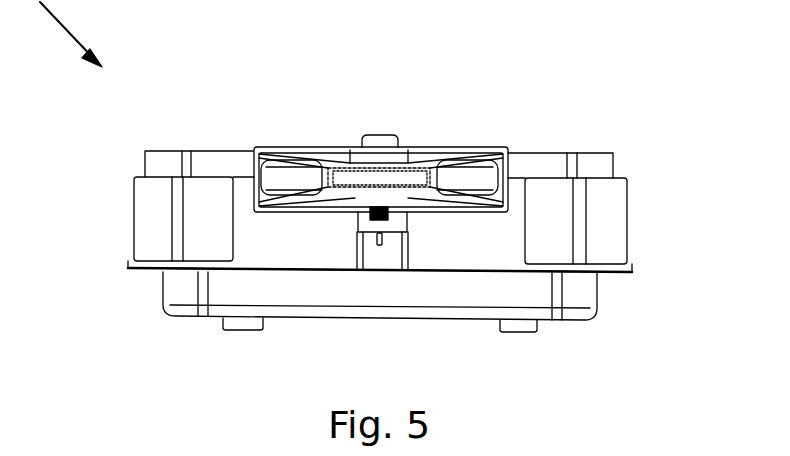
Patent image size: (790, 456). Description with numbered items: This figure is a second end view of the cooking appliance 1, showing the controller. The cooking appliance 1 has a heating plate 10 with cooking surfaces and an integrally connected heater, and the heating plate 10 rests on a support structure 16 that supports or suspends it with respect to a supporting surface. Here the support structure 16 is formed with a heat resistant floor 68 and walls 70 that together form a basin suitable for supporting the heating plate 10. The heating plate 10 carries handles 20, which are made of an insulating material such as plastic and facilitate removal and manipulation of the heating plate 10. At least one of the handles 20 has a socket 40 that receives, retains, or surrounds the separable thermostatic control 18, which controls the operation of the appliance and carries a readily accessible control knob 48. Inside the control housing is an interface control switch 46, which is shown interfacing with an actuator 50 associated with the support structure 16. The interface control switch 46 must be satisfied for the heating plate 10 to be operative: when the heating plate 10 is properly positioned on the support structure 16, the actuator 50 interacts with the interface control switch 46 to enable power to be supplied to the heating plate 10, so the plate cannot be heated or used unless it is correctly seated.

The cooking appliance 1 is at (80, 455).
The heating plate 10 is at (612, 152).
The support structure 16 is at (628, 230).
The thermostatic control 18 is at (403, 168).
The handle 20 is at (495, 150).
The socket 40 is at (353, 180).
The interface control switch 46 is at (387, 222).
The control knob 48 is at (372, 133).
The actuator 50 is at (380, 245).
The heat resistant floor 68 is at (587, 320).
The walls 70 is at (583, 290).